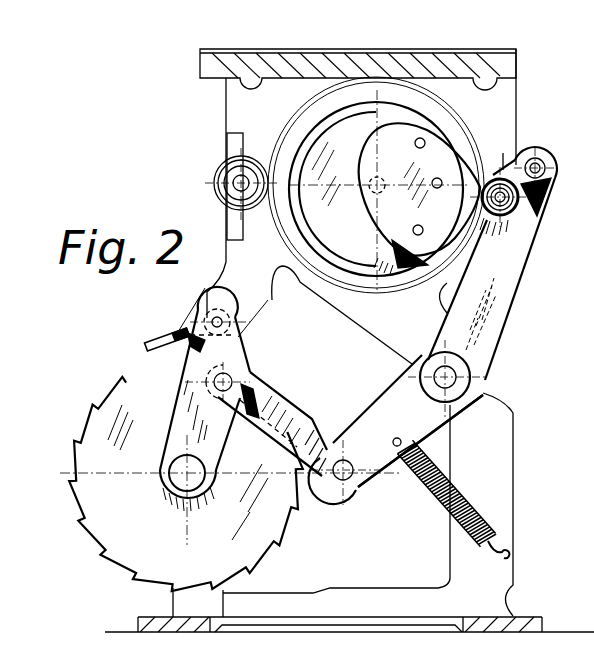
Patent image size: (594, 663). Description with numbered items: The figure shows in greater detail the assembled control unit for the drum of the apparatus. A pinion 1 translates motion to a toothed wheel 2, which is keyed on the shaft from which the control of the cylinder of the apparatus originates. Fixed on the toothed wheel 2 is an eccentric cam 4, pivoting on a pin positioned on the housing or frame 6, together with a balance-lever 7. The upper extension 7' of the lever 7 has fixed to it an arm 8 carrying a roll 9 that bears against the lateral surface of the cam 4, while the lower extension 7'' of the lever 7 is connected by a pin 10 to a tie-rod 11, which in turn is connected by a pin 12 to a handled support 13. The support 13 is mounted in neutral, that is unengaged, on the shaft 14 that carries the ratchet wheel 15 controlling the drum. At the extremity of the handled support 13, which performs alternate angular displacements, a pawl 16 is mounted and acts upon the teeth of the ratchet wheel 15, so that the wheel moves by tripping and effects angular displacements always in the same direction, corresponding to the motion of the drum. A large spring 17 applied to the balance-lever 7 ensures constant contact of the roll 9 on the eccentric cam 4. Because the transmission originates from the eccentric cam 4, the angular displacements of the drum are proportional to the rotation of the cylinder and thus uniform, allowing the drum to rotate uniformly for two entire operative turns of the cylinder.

The pinion 1 is at (214, 183).
The toothed wheel 2 is at (330, 100).
The eccentric cam 4 is at (440, 158).
The housing or frame 6 is at (450, 375).
The balance-lever 7 is at (455, 430).
The upper extension of the lever 7' is at (500, 270).
The lower extension of the lever 7'' is at (408, 421).
The arm 8 is at (547, 152).
The roll 9 is at (522, 216).
The pin 10 is at (355, 490).
The tie-rod 11 is at (306, 432).
The pin 12 is at (236, 376).
The handled support 13 is at (182, 440).
The shaft 14 is at (182, 478).
The ratchet wheel 15 is at (68, 454).
The pawl 16 is at (157, 338).
The large spring 17 is at (472, 498).